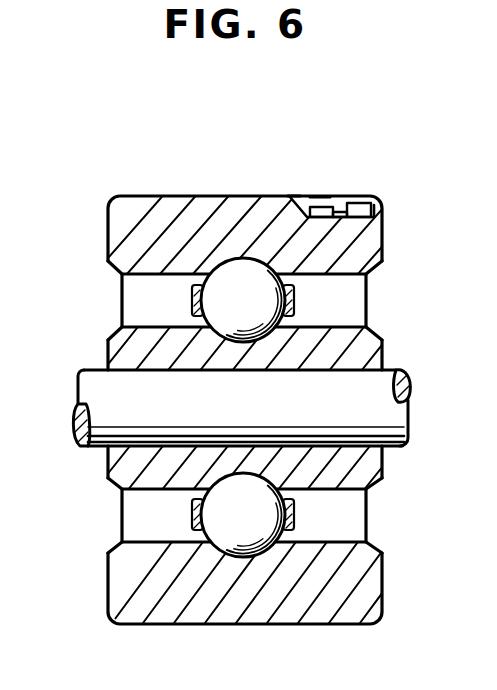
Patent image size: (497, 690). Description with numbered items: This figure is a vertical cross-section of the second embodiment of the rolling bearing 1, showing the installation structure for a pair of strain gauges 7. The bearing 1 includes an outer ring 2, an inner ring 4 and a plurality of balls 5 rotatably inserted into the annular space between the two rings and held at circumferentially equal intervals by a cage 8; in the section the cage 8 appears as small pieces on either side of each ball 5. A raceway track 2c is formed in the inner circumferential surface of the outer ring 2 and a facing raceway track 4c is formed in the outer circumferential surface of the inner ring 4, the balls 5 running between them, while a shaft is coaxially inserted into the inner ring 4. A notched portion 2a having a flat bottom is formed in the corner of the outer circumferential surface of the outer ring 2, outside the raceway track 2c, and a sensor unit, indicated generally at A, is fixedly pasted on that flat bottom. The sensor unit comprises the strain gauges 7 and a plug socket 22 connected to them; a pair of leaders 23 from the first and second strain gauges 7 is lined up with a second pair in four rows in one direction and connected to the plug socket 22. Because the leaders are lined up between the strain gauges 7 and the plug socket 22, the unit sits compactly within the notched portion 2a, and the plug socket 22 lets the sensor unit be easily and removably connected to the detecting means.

The rolling bearing 1 is at (365, 184).
The outer ring 2 is at (363, 247).
The notched portion 2a is at (291, 194).
The raceway track 2c is at (238, 256).
The inner ring 4 is at (370, 342).
The raceway track 4c is at (236, 352).
The balls 5 is at (285, 300).
The strain gauges 7 is at (318, 195).
The cage 8 is at (190, 303).
The plug socket 22 is at (383, 211).
The pair of leaders 23 is at (343, 196).
The sensor assembly A is at (366, 128).